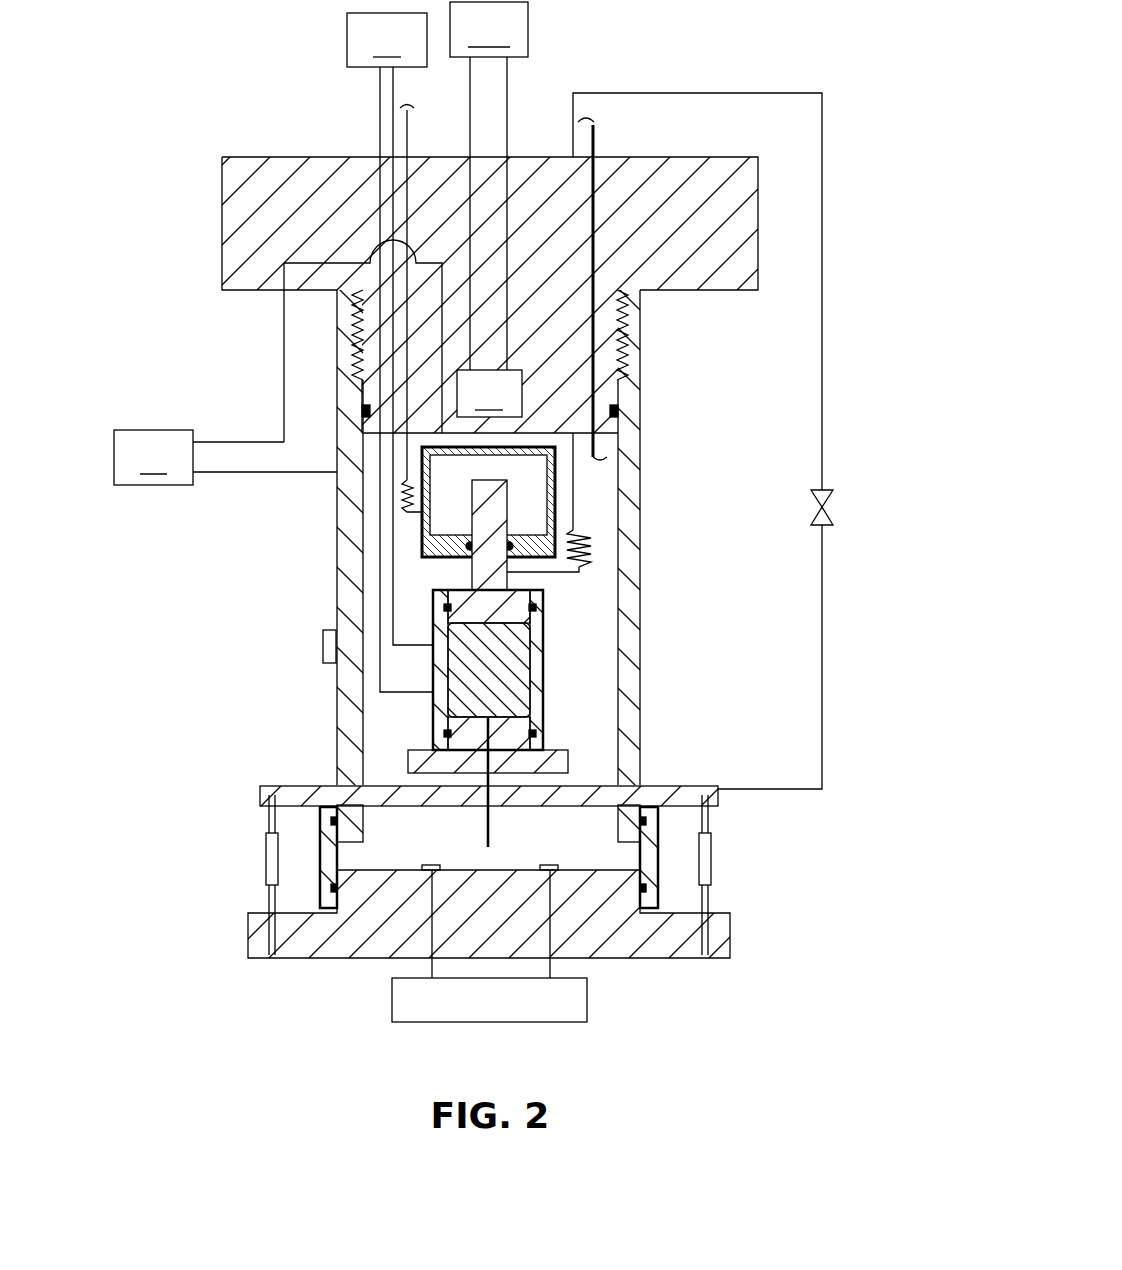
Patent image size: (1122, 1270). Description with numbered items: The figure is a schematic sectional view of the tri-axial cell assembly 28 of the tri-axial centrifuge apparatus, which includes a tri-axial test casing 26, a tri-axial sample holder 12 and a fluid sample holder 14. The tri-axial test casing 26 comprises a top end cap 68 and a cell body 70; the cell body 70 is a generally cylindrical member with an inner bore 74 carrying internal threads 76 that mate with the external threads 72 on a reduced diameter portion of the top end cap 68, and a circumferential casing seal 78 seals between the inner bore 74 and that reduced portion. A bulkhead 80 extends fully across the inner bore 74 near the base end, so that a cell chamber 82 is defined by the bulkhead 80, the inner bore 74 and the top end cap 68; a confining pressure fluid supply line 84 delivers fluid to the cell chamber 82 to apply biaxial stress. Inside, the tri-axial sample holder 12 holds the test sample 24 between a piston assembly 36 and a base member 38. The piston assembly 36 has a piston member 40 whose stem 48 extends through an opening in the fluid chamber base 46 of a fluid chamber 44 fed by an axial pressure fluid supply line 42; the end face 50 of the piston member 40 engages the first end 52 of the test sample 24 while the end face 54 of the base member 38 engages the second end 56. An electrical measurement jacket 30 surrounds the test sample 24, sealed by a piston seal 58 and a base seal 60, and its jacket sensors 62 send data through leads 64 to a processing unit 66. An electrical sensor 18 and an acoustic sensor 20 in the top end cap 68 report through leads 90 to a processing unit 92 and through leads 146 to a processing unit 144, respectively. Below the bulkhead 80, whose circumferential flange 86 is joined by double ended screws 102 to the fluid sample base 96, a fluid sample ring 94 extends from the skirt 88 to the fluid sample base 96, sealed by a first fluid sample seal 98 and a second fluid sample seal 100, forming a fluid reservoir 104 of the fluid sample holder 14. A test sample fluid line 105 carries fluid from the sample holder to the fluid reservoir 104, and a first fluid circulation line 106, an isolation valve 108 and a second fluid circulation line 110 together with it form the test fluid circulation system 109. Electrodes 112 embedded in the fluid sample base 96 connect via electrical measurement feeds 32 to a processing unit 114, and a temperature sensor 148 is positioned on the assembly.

The tri-axial sample holder 12 is at (558, 647).
The fluid sample holder 14 is at (190, 860).
The electrical sensor 18 is at (445, 440).
The acoustic sensor 20 is at (489, 393).
The test sample 24 is at (512, 675).
The tri-axial test casing 26 is at (255, 560).
The tri-axial cell assembly 28 is at (160, 322).
The electrical measurement jacket 30 is at (545, 700).
The electrical measurement feeds 32 is at (600, 913).
The piston assembly 36 is at (403, 543).
The base member 38 is at (560, 760).
The piston member 40 is at (470, 600).
The axial pressure fluid supply line 42 is at (407, 135).
The fluid chamber 44 is at (540, 483).
The fluid chamber base 46 is at (585, 535).
The stem 48 is at (500, 512).
The end face 50 is at (440, 625).
The first end 52 is at (555, 595).
The end face 54 is at (440, 735).
The second end 56 is at (515, 735).
The piston seal 58 is at (535, 610).
The base seal 60 is at (440, 765).
The jacket sensors 62 is at (435, 700).
The leads 64 is at (380, 110).
The processing unit 66 is at (387, 40).
The top end cap 68 is at (698, 157).
The cell body 70 is at (633, 568).
The external threads 72 is at (630, 360).
The inner bore 74 is at (605, 622).
The internal threads 76 is at (625, 327).
The casing seal 78 is at (618, 412).
The bulkhead 80 is at (600, 786).
The cell chamber 82 is at (370, 500).
The confining pressure fluid supply line 84 is at (598, 128).
The circumferential flange 86 is at (295, 786).
The skirt 88 is at (268, 850).
The leads 90 is at (284, 352).
The processing unit 92 is at (225, 457).
The fluid sample ring 94 is at (712, 845).
The fluid sample base 96 is at (305, 948).
The first fluid sample seal 98 is at (648, 823).
The second fluid sample seal 100 is at (650, 892).
The double ended screws 102 is at (266, 875).
The fluid reservoir 104 is at (320, 815).
The test sample fluid line 105 is at (486, 830).
The first fluid circulation line 106 is at (822, 575).
The isolation valve 108 is at (833, 507).
The test fluid circulation system 109 is at (832, 382).
The second fluid circulation line 110 is at (822, 430).
The electrodes 112 is at (660, 870).
The processing unit 114 is at (392, 1000).
The processing unit 144 is at (489, 186).
The leads 146 is at (508, 85).
The temperature sensor 148 is at (325, 645).